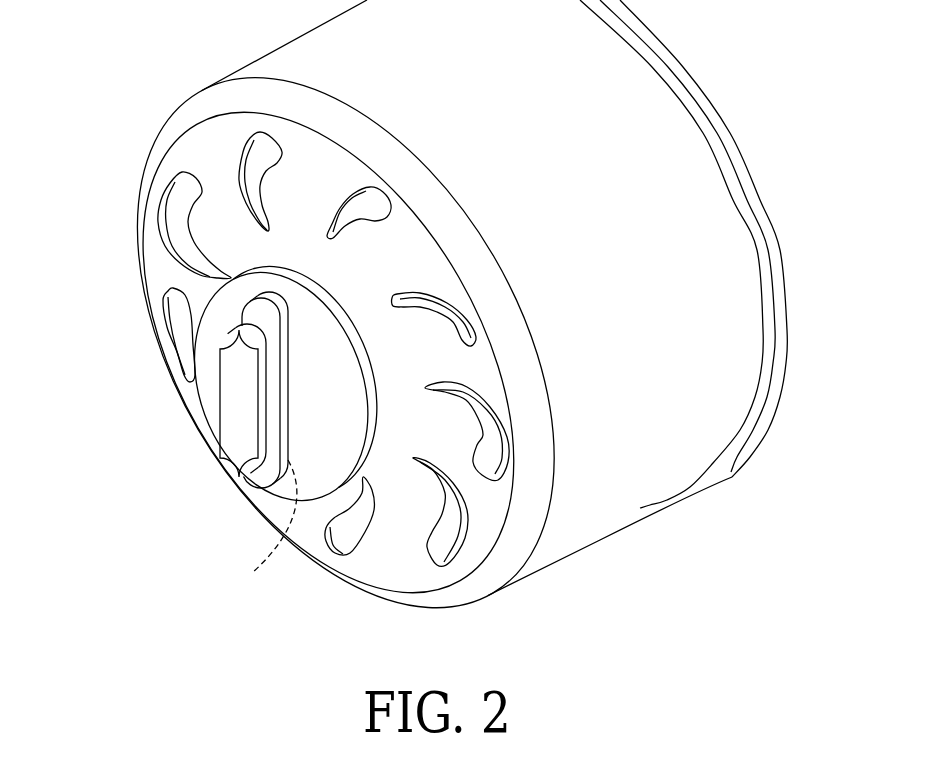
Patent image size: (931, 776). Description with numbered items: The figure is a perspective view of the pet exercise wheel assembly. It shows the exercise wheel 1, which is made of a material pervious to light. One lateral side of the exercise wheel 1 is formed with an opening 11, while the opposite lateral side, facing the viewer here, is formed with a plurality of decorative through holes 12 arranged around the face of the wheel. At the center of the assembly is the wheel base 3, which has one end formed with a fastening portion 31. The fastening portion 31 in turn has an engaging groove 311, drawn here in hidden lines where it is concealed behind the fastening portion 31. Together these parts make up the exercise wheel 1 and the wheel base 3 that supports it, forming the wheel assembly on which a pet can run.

The exercise wheel 1 is at (610, 497).
The opening 11 is at (730, 135).
The decorative through holes 12 is at (180, 200).
The wheel base 3 is at (225, 422).
The fastening portion 31 is at (260, 312).
The engaging groove 311 is at (246, 529).